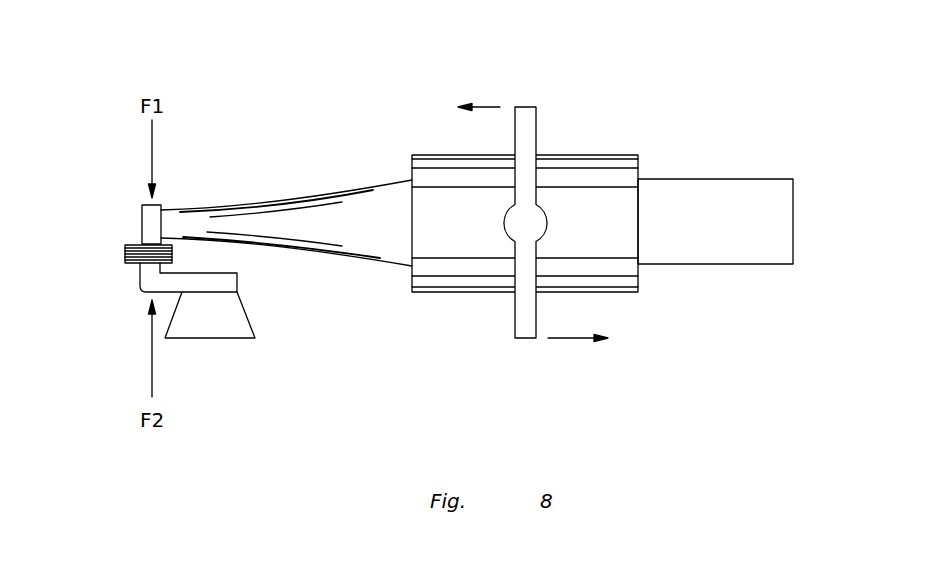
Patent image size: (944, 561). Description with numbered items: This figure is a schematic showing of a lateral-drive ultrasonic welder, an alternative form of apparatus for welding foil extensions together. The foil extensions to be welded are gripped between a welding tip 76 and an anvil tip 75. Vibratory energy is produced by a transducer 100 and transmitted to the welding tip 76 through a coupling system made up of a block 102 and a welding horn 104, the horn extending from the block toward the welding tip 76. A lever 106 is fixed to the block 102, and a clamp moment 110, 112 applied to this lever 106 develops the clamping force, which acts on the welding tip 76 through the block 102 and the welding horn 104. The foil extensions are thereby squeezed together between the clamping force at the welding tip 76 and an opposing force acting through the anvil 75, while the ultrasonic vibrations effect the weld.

The anvil tip 75 is at (148, 282).
The welding tip 76 is at (148, 223).
The transducer 100 is at (724, 198).
The block 102 is at (597, 177).
The welding horn 104 is at (295, 217).
The lever 106 is at (525, 270).
The clamp moment 110 is at (493, 107).
The clamp moment 112 is at (563, 340).